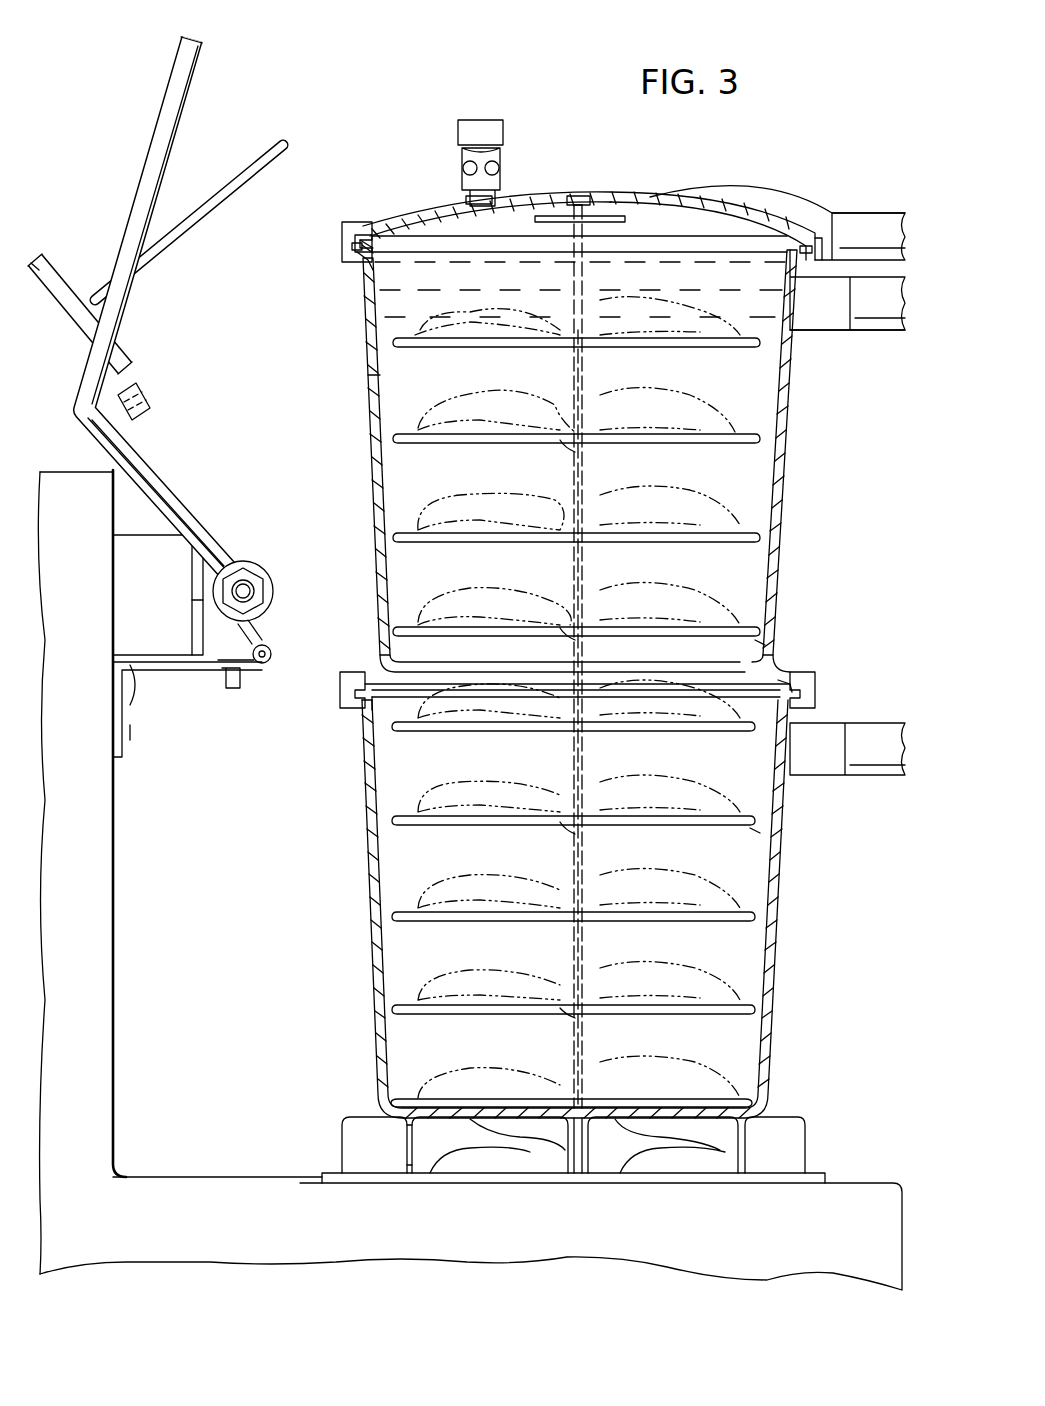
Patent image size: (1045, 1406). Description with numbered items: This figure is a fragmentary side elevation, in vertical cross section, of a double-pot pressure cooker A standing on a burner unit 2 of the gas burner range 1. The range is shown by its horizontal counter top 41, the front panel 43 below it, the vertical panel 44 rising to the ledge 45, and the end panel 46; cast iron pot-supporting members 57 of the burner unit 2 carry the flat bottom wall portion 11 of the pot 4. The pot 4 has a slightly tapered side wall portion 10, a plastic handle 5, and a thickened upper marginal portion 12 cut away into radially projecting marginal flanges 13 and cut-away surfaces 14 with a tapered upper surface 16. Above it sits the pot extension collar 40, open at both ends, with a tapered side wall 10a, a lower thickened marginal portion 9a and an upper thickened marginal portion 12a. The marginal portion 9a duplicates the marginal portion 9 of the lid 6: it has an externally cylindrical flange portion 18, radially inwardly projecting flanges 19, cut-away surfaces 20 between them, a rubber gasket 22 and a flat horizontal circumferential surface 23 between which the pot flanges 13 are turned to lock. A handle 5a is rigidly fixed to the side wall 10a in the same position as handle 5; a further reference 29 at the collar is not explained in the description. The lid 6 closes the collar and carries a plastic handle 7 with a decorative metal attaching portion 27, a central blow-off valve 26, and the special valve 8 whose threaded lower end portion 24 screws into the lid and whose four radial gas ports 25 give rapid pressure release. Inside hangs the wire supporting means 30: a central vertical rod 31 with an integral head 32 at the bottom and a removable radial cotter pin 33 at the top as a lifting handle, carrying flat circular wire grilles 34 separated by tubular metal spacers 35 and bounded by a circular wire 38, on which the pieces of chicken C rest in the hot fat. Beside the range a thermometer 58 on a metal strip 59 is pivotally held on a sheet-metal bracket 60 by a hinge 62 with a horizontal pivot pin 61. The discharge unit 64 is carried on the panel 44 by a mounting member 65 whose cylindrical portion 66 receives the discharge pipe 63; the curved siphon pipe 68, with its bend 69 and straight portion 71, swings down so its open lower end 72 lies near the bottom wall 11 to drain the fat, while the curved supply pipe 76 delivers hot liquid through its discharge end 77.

The gas burner range 1 is at (856, 1161).
The burner unit 2 is at (805, 1134).
The pot 4 is at (360, 926).
The plastic handle 5 is at (875, 729).
The handle 5a is at (878, 332).
The lid 6 is at (664, 188).
The plastic handle 7 is at (865, 212).
The special valve 8 is at (495, 122).
The thickened marginal portion 9 is at (350, 227).
The thickened marginal portion 9a is at (345, 685).
The side wall portion 10 is at (372, 864).
The side wall 10a is at (370, 476).
The bottom wall portion 11 is at (460, 1126).
The upper marginal portion 12 is at (375, 695).
The thickened marginal portion 12a is at (380, 247).
The marginal flanges 13 is at (352, 245).
The cut-away surfaces 14 is at (815, 244).
The upper surface 16 is at (790, 680).
The cylindrical flange portion 18 is at (355, 241).
The flanges 19 is at (358, 263).
The cut-away surfaces 20 is at (810, 269).
The rubber gasket 22 is at (365, 222).
The circumferential surface 23 is at (790, 691).
The threaded lower end portion 24 is at (492, 200).
The radial gas ports 25 is at (500, 160).
The blow-off valve 26 is at (580, 195).
The metal attaching portion 27 is at (775, 190).
The upper vessel bottom rim 29 is at (380, 677).
The wire supporting means 30 is at (680, 234).
The central vertical rod 31 is at (585, 265).
The integral head 32 is at (570, 1121).
The cotter pin 33 is at (612, 214).
The wire grilles 34 is at (754, 422).
The tubular spacers 35 is at (572, 453).
The circular wire 38 is at (762, 461).
The pot extension collar 40 is at (362, 399).
The counter top 41 is at (270, 1176).
The front panel 43 is at (905, 1232).
The vertical panel 44 is at (115, 950).
The ledge 45 is at (58, 472).
The end panel 46 is at (222, 1220).
The pot-supporting members 57 is at (765, 1126).
The thermometer 58 is at (270, 150).
The metal strip 59 is at (50, 270).
The sheet-metal bracket 60 is at (172, 670).
The pivot pin 61 is at (268, 650).
The hinge 62 is at (272, 657).
The discharge pipe 63 is at (225, 590).
The discharge unit 64 is at (168, 611).
The mounting member 65 is at (130, 568).
The cylindrical portion 66 is at (262, 569).
The curved siphon pipe 68 is at (160, 490).
The bend 69 is at (80, 437).
The straight portion 71 is at (175, 85).
The open lower end 72 is at (200, 38).
The curved supply pipe 76 is at (140, 428).
The discharge end 77 is at (142, 394).
The double-pot pressure cooker A is at (393, 162).
The pieces of chicken C is at (670, 461).